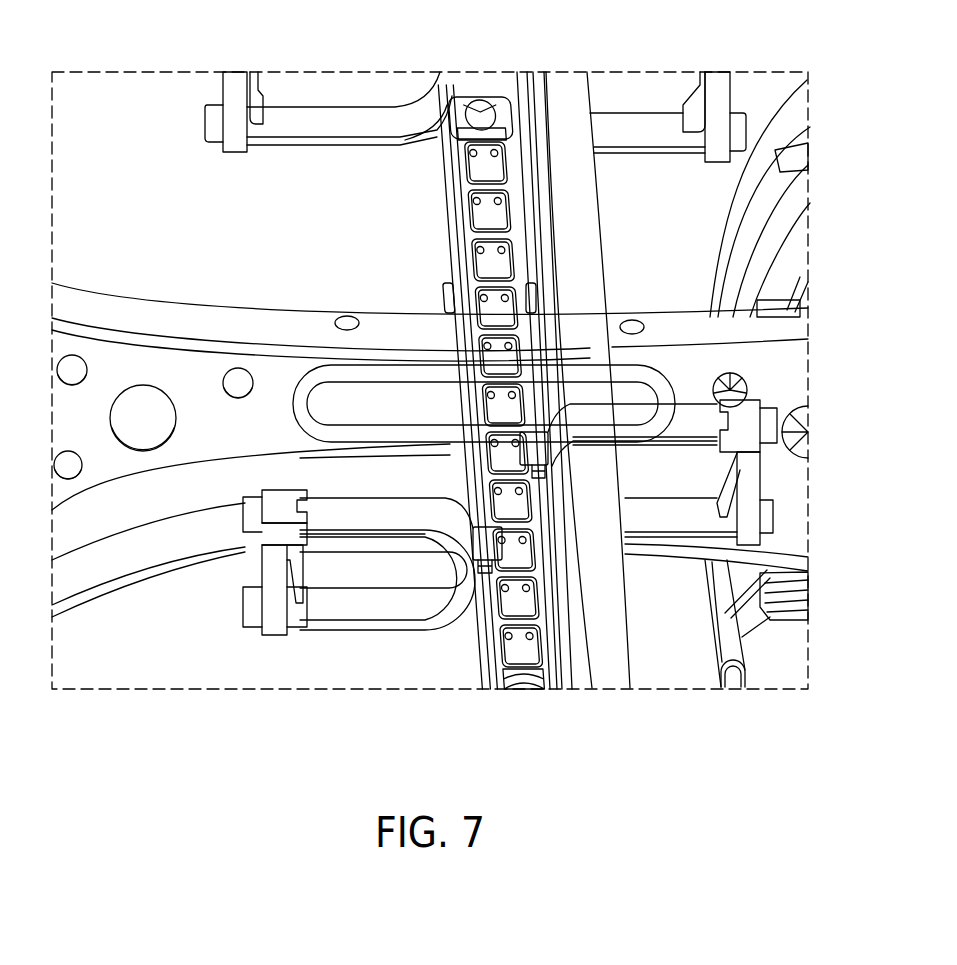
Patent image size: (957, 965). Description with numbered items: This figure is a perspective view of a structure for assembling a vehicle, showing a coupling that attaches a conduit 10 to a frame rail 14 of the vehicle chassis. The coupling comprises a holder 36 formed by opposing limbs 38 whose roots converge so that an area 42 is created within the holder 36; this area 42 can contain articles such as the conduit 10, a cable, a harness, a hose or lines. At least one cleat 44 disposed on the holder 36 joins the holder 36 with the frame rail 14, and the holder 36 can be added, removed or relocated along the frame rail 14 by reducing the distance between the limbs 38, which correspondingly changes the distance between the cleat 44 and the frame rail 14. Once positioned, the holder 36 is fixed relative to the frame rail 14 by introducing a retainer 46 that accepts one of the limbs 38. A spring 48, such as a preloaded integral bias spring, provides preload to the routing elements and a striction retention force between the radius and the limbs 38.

The conduit 10 is at (617, 673).
The frame rail 14 is at (553, 693).
The holder 36 is at (238, 601).
The limbs 38 is at (415, 518).
The area 42 is at (338, 582).
The cleat 44 is at (473, 530).
The retainer 46 is at (272, 640).
The spring 48 is at (300, 597).